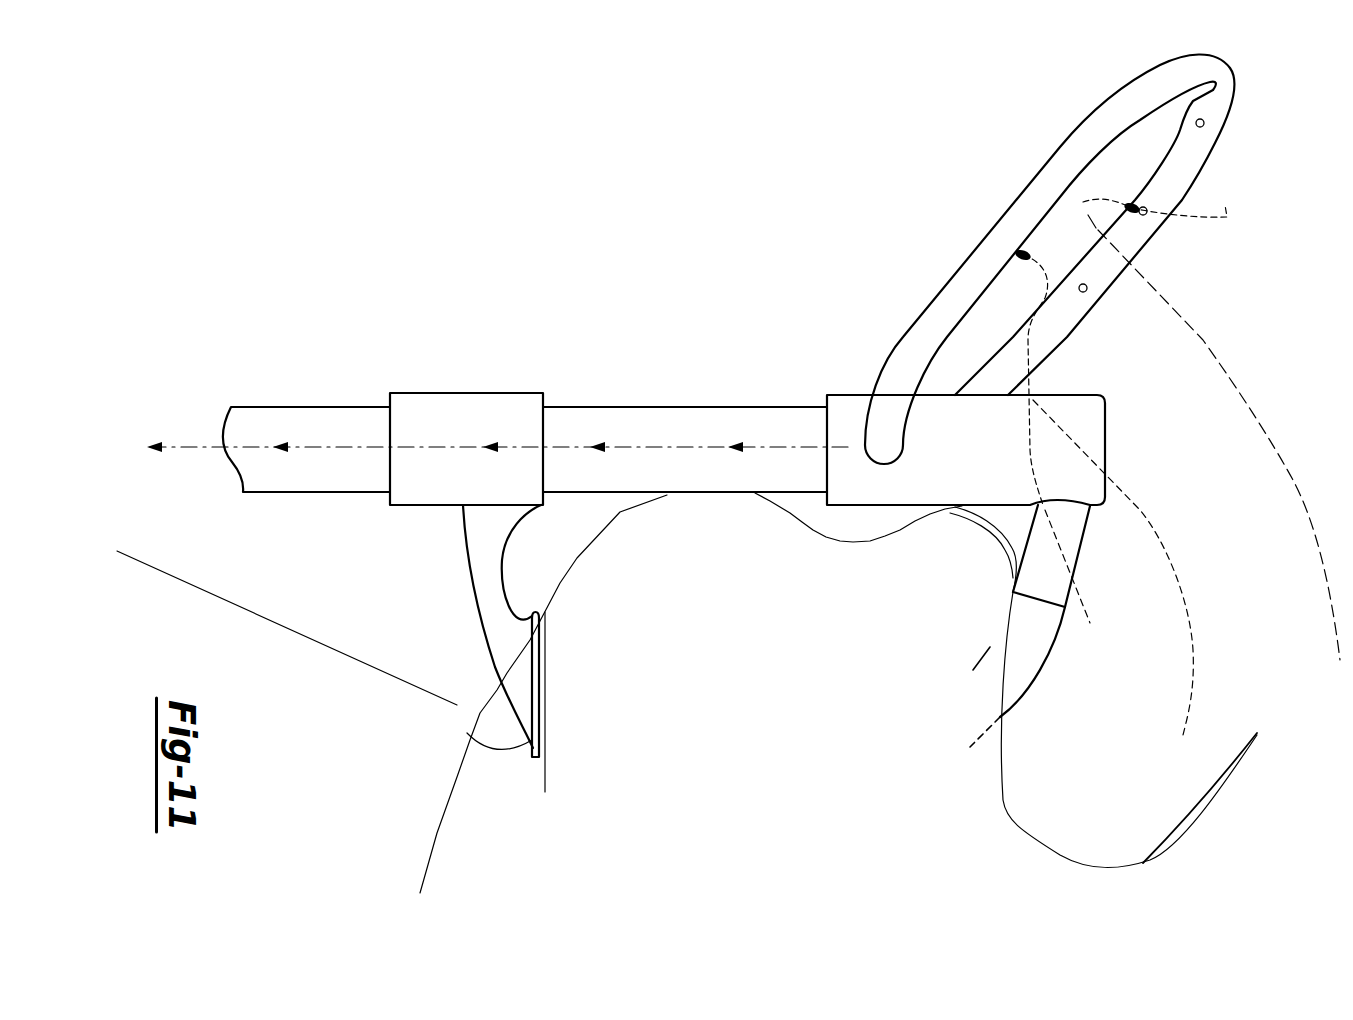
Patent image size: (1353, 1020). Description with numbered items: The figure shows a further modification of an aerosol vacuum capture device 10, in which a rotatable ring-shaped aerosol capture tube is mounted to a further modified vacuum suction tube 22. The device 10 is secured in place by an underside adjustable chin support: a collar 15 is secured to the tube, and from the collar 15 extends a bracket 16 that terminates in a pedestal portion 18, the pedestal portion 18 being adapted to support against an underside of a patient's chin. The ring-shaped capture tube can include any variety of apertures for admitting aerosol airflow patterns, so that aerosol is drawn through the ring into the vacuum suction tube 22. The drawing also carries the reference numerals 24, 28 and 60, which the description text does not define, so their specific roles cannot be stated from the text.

The aerosol vacuum capture device 10 is at (762, 265).
The collar 15 is at (440, 392).
The bracket 16 is at (463, 571).
The pedestal portion 18 is at (466, 734).
The vacuum suction tube 22 is at (857, 393).
The ring loop 24 is at (999, 212).
The strap 28 is at (1177, 550).
The aperture 60 is at (1203, 125).